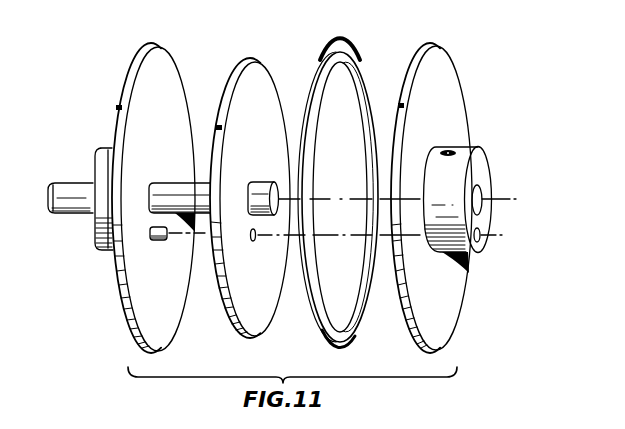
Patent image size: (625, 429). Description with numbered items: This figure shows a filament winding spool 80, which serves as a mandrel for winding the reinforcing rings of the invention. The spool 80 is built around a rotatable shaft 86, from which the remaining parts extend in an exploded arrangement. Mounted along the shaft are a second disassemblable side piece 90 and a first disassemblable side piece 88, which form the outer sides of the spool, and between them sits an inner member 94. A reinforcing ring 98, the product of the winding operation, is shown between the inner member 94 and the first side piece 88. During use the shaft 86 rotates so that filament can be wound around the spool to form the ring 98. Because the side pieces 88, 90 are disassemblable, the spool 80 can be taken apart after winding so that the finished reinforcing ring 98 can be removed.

The filament winding spool 80 is at (520, 115).
The rotatable shaft 86 is at (70, 184).
The first disassemblable side piece 88 is at (433, 44).
The second disassemblable side piece 90 is at (153, 44).
The inner member 94 is at (248, 59).
The reinforcing ring 98 is at (343, 52).